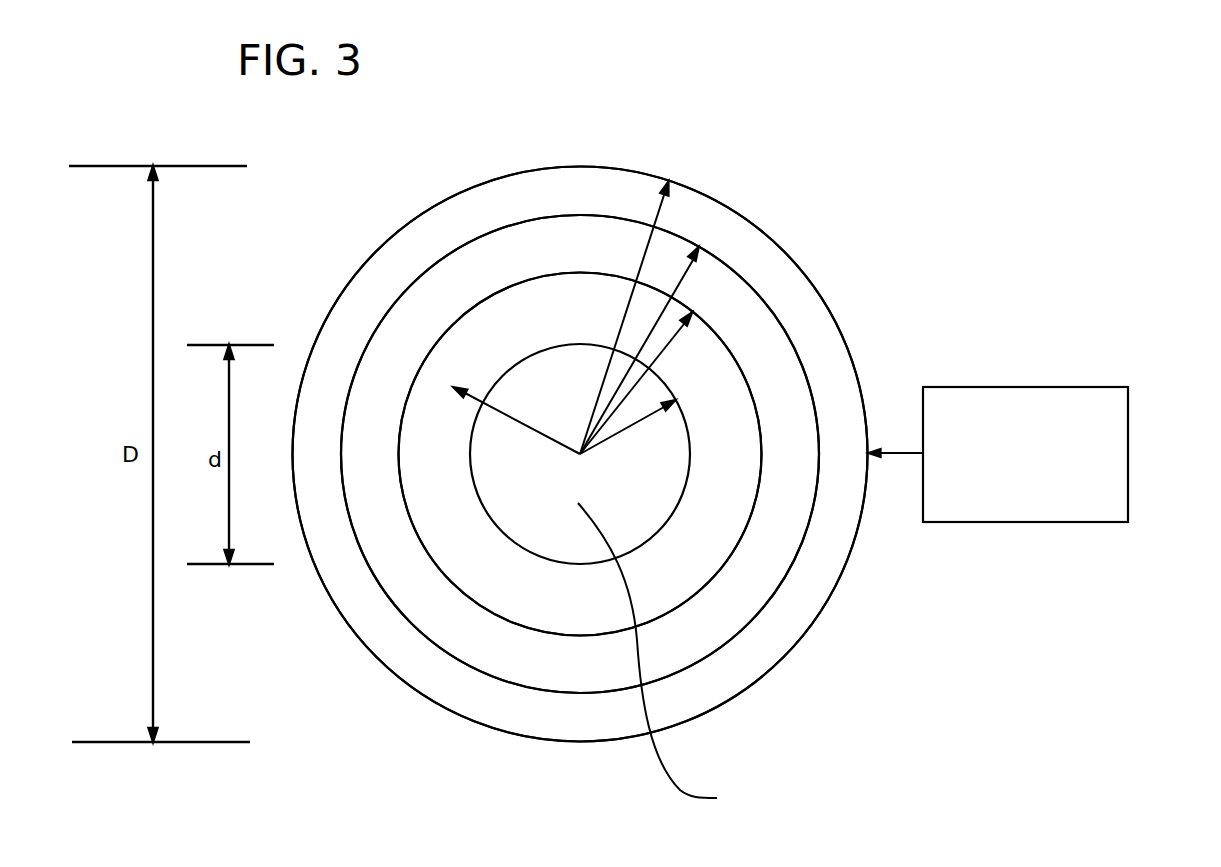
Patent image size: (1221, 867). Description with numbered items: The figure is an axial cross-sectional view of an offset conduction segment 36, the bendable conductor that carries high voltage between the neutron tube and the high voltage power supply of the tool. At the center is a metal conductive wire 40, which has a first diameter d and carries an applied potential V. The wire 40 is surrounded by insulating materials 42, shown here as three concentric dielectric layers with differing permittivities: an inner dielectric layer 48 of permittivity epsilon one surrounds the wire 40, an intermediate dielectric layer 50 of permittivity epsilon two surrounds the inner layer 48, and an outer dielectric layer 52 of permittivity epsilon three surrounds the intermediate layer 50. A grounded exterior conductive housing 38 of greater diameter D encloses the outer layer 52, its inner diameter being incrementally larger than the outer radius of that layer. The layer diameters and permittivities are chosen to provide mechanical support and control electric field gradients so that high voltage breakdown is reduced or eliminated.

The offset conduction segment 36 is at (619, 452).
The exterior conductive housing 38 is at (1085, 387).
The conductive wire 40 is at (503, 462).
The insulating materials 42 is at (495, 258).
The inner dielectric layer 48 is at (703, 533).
The intermediate dielectric layer 50 is at (760, 347).
The outer dielectric layer 52 is at (847, 397).